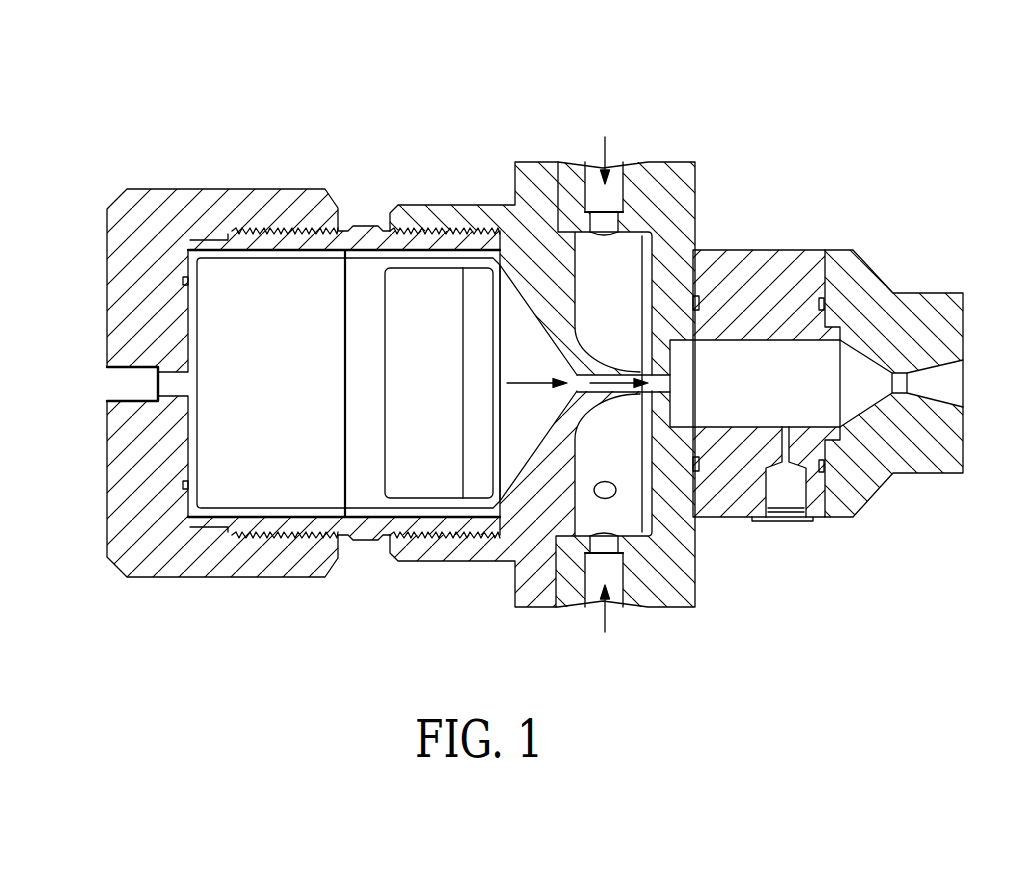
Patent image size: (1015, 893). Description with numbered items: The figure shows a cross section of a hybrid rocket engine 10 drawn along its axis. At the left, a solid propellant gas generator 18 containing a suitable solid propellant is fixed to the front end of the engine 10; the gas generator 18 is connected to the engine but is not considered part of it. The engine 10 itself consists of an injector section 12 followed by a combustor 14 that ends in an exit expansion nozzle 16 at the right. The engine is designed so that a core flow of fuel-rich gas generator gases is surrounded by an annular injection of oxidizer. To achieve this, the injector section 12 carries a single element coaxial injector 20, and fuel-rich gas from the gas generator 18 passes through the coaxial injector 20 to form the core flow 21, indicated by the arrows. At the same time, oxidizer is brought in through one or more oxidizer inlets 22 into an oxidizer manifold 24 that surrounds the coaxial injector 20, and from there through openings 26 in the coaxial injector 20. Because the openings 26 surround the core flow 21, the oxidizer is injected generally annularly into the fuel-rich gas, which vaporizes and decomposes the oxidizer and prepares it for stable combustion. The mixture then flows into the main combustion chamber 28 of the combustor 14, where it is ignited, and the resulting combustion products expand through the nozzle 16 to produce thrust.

The hybrid rocket engine 10 is at (393, 94).
The injector section 12 is at (584, 375).
The combustor 14 is at (834, 400).
The exit expansion nozzle 16 is at (948, 381).
The solid propellant gas generator 18 is at (357, 555).
The single element coaxial injector 20 is at (650, 362).
The core flow 21 is at (600, 390).
The oxidizer inlet 22 is at (605, 197).
The oxidizer manifold 24 is at (607, 290).
The openings 26 is at (661, 404).
The main combustion chamber 28 is at (777, 362).